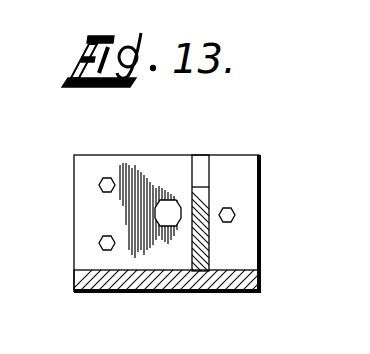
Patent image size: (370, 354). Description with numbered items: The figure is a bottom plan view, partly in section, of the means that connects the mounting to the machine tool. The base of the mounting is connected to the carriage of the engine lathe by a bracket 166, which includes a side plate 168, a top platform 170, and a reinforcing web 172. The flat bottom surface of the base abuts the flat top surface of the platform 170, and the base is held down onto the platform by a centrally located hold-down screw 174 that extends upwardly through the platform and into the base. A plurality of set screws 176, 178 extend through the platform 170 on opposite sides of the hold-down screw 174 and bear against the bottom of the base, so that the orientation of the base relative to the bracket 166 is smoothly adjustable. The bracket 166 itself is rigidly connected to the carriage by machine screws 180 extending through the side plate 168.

The bracket 166 is at (266, 226).
The side plate 168 is at (196, 287).
The top platform 170 is at (240, 168).
The reinforcing web 172 is at (198, 160).
The hold-down screw 174 is at (170, 212).
The set screw 176 is at (110, 178).
The set screw 178 is at (99, 245).
The machine screw 180 is at (235, 214).